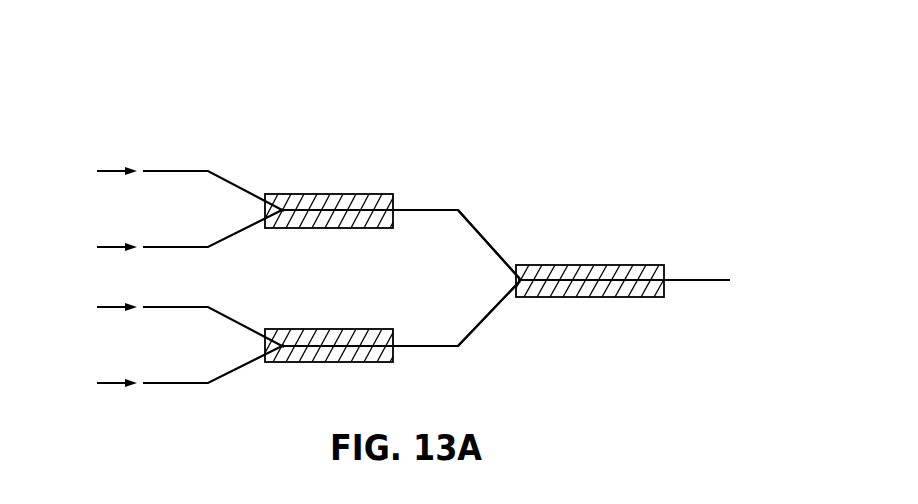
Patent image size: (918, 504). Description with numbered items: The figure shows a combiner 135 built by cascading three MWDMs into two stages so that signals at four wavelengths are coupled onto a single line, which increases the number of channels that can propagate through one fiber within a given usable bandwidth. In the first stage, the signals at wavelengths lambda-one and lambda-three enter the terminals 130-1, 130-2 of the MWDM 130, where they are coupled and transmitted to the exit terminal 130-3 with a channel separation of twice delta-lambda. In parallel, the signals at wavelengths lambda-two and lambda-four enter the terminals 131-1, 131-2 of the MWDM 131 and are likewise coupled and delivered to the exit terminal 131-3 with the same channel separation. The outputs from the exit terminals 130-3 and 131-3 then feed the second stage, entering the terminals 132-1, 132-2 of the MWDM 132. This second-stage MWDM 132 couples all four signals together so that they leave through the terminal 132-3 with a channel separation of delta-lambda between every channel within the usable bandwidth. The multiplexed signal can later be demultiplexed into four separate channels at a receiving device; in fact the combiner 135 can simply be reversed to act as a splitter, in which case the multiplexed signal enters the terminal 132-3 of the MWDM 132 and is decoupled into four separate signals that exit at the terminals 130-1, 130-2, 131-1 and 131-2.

The combiner 135 is at (146, 58).
The MWDM 130 is at (356, 176).
The terminal 130-1 is at (185, 170).
The terminal 130-2 is at (232, 238).
The exit terminal 130-3 is at (415, 208).
The MWDM 131 is at (355, 320).
The terminal 131-1 is at (223, 315).
The terminal 131-2 is at (197, 385).
The exit terminal 131-3 is at (418, 345).
The MWDM 132 is at (635, 253).
The terminal 132-1 is at (483, 233).
The terminal 132-2 is at (483, 322).
The terminal 132-3 is at (705, 280).